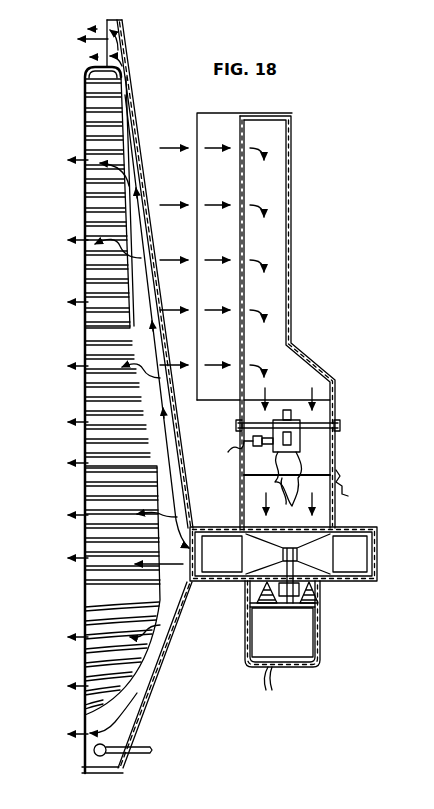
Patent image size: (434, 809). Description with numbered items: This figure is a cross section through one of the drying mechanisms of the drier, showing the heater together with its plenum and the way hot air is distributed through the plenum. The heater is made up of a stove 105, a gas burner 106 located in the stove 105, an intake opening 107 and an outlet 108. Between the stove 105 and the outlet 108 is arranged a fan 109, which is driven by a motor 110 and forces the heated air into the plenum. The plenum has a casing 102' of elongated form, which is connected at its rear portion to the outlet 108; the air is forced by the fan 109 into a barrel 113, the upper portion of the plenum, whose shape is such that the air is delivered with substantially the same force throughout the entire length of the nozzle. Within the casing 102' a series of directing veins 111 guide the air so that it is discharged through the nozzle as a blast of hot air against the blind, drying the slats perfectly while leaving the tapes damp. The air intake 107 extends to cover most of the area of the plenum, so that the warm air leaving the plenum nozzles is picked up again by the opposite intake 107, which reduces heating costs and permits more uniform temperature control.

The directing veins 111 is at (87, 125).
The casing 102' is at (140, 396).
The intake opening 107 is at (213, 333).
The gas burner 106 is at (300, 442).
The barrel 113 is at (175, 465).
The stove 105 is at (320, 512).
The outlet 108 is at (190, 578).
The fan 109 is at (343, 555).
The motor 110 is at (270, 637).